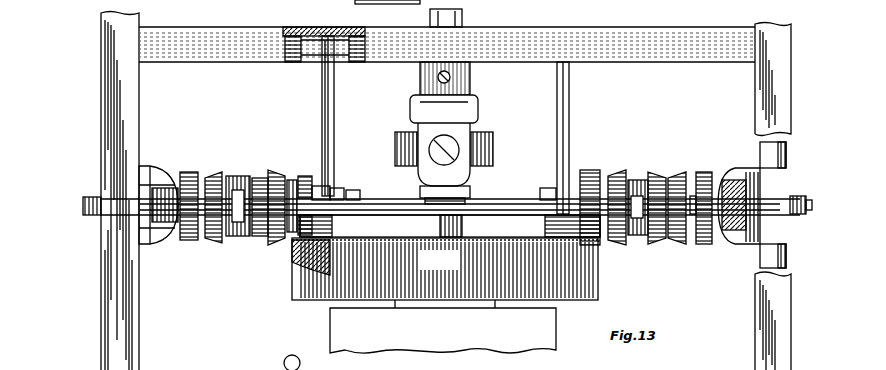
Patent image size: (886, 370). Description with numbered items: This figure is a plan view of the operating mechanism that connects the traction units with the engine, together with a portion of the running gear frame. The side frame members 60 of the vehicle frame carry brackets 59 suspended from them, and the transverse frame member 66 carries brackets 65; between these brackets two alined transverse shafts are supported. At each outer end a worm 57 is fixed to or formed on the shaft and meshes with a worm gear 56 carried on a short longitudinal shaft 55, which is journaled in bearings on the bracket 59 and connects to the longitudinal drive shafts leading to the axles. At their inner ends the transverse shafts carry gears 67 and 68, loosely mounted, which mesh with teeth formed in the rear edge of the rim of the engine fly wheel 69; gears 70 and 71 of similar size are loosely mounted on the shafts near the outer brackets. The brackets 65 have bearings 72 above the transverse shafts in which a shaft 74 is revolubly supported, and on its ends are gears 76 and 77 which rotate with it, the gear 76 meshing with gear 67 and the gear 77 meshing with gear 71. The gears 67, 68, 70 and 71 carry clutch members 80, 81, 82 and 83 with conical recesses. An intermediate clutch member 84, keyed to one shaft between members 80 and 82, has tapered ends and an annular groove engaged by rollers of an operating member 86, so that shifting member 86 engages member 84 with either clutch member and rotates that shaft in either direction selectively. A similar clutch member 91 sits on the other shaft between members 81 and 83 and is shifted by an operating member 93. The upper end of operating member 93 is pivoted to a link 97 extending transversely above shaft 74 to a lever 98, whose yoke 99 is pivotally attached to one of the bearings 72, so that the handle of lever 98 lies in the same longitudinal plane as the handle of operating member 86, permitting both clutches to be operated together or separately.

The short longitudinal shaft 55 is at (786, 150).
The worm gear 56 is at (90, 196).
The worm 57 is at (806, 212).
The bracket 59 is at (160, 170).
The side frame members 60 is at (139, 103).
The bracket 65 is at (334, 110).
The transverse frame member 66 is at (447, 31).
The gear 67 is at (292, 262).
The gear 68 is at (545, 230).
The engine fly wheel 69 is at (445, 269).
The gear 70 is at (190, 172).
The gear 71 is at (705, 172).
The bearing 72 is at (334, 188).
The shaft 74 is at (405, 225).
The gear 76 is at (290, 232).
The gear 77 is at (714, 236).
The clutch member 80 is at (278, 170).
The clutch member 81 is at (618, 245).
The clutch member 82 is at (218, 172).
The clutch member 83 is at (676, 244).
The intermediate clutch member 84 is at (240, 176).
The operating member 86 is at (248, 236).
The clutch member 91 is at (655, 172).
The operating member 93 is at (640, 236).
The link 97 is at (380, 215).
The lever 98 is at (303, 176).
The yoke 99 is at (330, 186).